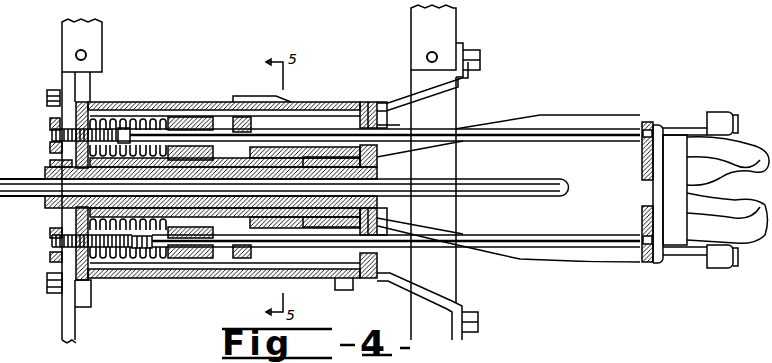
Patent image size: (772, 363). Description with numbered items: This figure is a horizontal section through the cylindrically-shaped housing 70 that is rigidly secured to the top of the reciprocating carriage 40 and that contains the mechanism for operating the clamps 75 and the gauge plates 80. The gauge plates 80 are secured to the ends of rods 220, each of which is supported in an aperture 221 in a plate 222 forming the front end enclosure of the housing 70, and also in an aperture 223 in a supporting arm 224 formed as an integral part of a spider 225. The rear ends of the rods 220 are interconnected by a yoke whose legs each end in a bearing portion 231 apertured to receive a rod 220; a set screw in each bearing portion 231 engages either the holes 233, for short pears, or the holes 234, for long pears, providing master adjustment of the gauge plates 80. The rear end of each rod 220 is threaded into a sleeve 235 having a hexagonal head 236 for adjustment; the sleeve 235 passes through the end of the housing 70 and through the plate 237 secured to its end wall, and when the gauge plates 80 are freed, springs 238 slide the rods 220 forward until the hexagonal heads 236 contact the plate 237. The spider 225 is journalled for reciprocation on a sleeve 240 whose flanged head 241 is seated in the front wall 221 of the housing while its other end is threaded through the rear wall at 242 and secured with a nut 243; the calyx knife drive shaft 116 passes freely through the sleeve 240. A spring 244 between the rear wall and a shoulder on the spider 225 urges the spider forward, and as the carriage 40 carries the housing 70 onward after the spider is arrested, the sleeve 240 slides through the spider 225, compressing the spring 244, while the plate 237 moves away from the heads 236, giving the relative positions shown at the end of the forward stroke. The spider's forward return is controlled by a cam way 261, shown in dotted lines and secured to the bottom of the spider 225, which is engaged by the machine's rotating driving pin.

The carriage 40 is at (412, 32).
The housing 70 is at (316, 104).
The clamps 75 is at (718, 121).
The gauge plates 80 is at (642, 200).
The calyx knife drive shaft 116 is at (484, 182).
The rods 220 is at (556, 144).
The aperture 221 is at (390, 128).
The plate 222 is at (370, 103).
The aperture 223 is at (268, 96).
The supporting arm 224 is at (233, 110).
The spider 225 is at (330, 140).
The bearing portion 231 is at (198, 110).
The holes 233 is at (172, 116).
The holes 234 is at (181, 128).
The sleeve 235 is at (126, 118).
The hexagonal head 236 is at (52, 134).
The plate 237 is at (75, 116).
The springs 238 is at (88, 106).
The sleeve 240 is at (270, 162).
The flanged head 241 is at (380, 162).
The threaded rear wall portion 242 is at (62, 232).
The nut 243 is at (52, 166).
The spring 244 is at (118, 228).
The cam way 261 is at (290, 282).